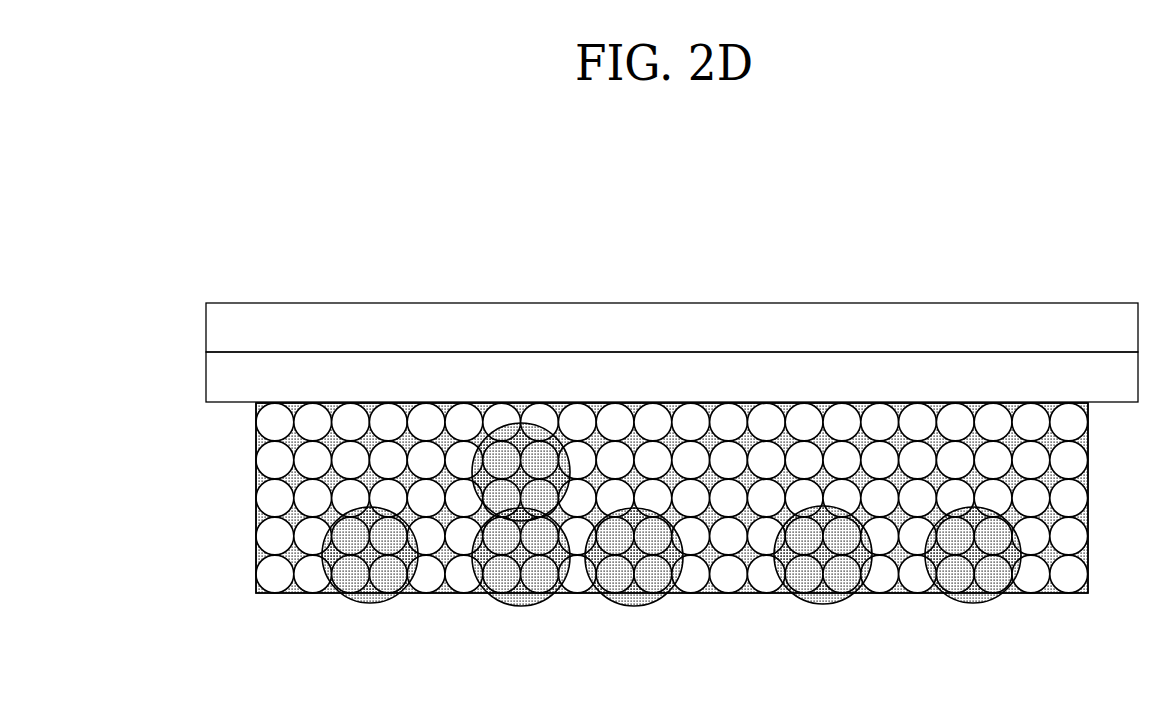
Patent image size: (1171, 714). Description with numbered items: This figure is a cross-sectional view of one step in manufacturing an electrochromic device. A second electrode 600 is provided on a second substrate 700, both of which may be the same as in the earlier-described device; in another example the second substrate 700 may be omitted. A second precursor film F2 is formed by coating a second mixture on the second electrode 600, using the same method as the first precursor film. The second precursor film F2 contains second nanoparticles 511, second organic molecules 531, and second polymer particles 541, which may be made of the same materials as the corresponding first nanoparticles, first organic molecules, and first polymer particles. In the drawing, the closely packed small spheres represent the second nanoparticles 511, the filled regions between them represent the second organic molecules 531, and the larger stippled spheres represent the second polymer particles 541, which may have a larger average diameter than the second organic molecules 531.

The second substrate 700 is at (215, 327).
The second electrode 600 is at (215, 382).
The second precursor film F2 is at (246, 408).
The second nanoparticles 511 is at (1074, 460).
The second organic molecules 531 is at (1055, 510).
The second polymer particles 541 is at (972, 588).